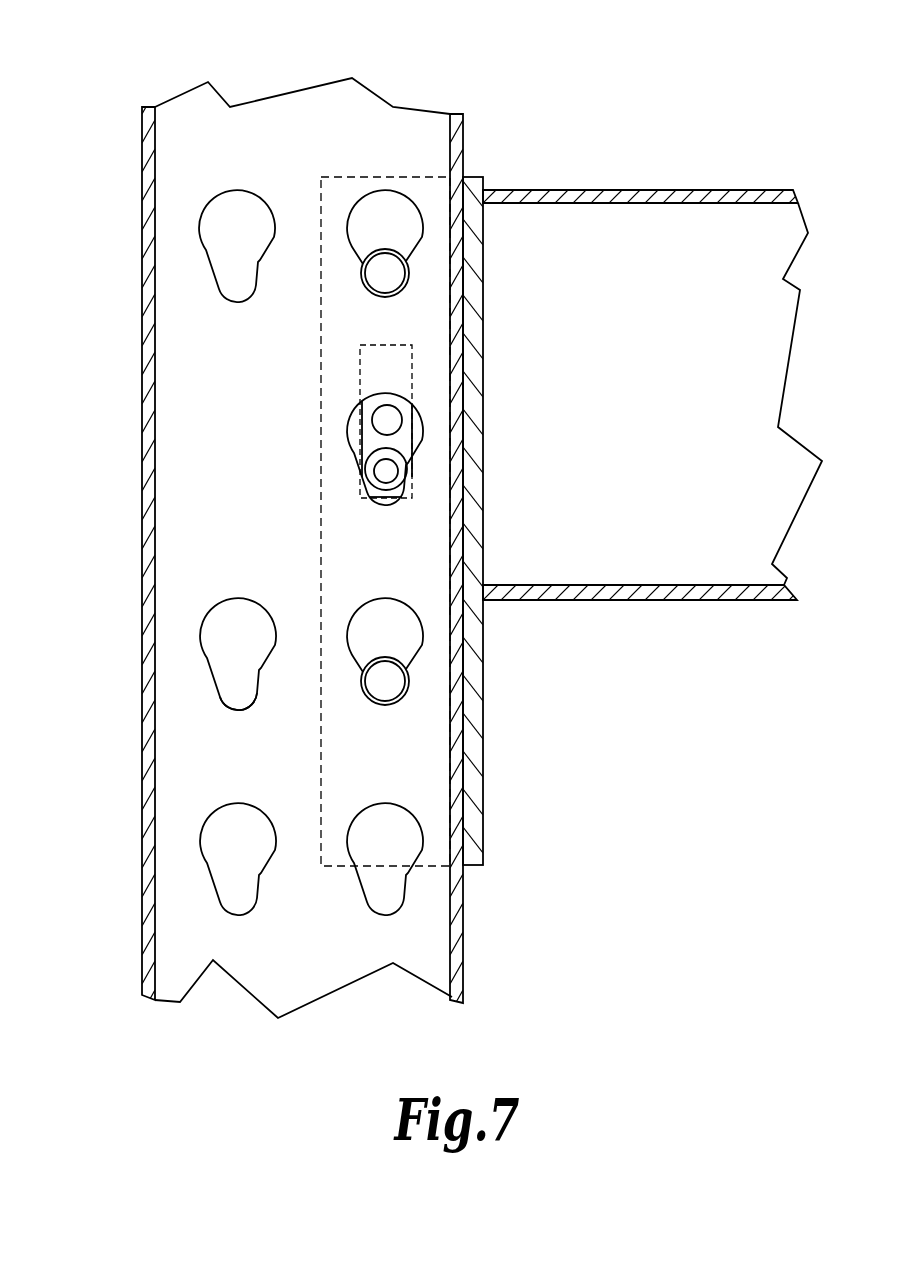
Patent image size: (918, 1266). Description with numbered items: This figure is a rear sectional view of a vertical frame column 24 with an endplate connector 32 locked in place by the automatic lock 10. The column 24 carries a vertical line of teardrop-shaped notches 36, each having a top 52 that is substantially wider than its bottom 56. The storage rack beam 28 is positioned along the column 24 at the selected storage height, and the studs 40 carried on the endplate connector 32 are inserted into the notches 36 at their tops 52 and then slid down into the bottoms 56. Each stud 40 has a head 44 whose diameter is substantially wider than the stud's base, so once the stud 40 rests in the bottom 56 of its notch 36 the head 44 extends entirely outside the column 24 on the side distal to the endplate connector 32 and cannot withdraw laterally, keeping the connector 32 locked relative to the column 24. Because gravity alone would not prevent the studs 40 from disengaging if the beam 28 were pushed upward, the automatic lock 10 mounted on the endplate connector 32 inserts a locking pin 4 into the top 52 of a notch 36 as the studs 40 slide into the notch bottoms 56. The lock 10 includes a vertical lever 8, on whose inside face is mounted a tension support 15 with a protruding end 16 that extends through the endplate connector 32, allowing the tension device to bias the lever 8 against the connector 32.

The vertical frame column 24 is at (200, 130).
The tapered notch 36 is at (198, 227).
The top of notch 52 is at (237, 620).
The bottom of notch 56 is at (238, 693).
The stud 40 is at (420, 258).
The head of stud 44 is at (392, 277).
The endplate connector 32 is at (482, 180).
The storage rack beam 28 is at (658, 190).
The automatic lock 10 is at (427, 415).
The vertical lever 8 is at (375, 358).
The locking pin 4 is at (382, 420).
The protruding end 16 is at (372, 477).
The tension support 15 is at (395, 490).